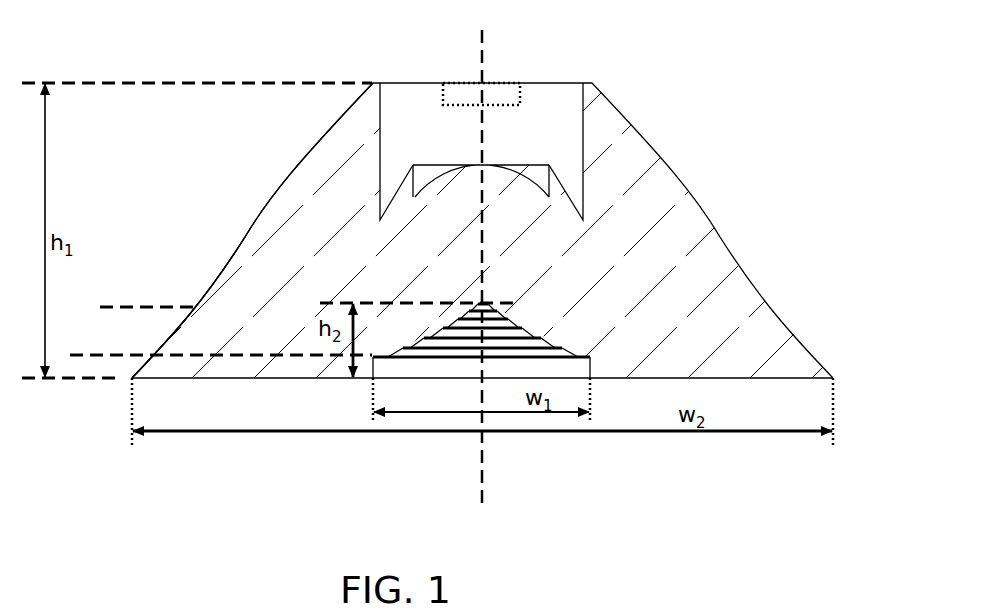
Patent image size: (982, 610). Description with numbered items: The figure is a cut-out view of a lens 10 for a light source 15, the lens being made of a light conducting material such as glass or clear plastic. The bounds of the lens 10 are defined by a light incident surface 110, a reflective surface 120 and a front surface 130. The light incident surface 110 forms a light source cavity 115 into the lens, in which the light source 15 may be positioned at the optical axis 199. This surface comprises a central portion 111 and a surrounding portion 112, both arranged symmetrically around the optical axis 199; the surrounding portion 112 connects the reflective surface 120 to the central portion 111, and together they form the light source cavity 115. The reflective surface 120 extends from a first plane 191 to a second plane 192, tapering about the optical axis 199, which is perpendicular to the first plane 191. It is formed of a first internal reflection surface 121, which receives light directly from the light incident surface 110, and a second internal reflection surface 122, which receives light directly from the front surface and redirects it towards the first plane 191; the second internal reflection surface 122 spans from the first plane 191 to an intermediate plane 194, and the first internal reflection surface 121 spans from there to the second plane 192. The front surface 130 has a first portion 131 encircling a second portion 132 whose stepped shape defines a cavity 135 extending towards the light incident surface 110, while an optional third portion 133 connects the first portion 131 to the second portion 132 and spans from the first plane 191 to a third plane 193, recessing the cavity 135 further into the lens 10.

The lens 10 is at (209, 52).
The light source 15 is at (462, 77).
The light incident surface 110 is at (588, 157).
The central portion 111 is at (521, 197).
The surrounding portion 112 is at (596, 110).
The light source cavity 115 is at (588, 134).
The reflective surface 120 is at (222, 230).
The first internal reflection surface 121 is at (262, 199).
The second internal reflection surface 122 is at (173, 322).
The front surface 130 is at (517, 353).
The first portion 131 is at (807, 366).
The second portion 132 is at (580, 338).
The third portion 133 is at (598, 365).
The cavity 135 is at (443, 364).
The first plane 191 is at (68, 380).
The second plane 192 is at (97, 82).
The third plane 193 is at (99, 356).
The intermediate plane 194 is at (138, 306).
The optical axis 199 is at (484, 478).